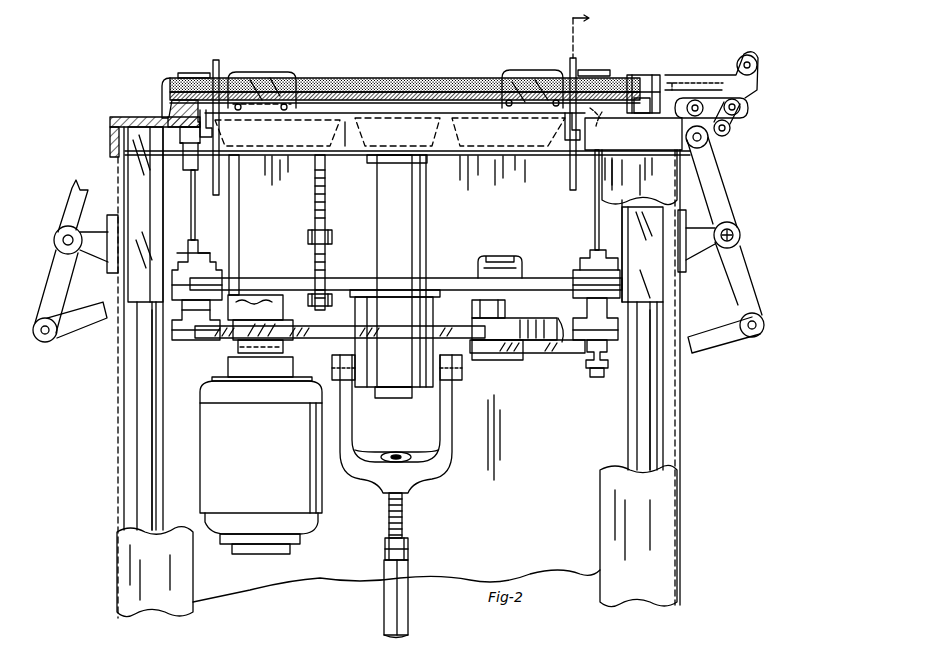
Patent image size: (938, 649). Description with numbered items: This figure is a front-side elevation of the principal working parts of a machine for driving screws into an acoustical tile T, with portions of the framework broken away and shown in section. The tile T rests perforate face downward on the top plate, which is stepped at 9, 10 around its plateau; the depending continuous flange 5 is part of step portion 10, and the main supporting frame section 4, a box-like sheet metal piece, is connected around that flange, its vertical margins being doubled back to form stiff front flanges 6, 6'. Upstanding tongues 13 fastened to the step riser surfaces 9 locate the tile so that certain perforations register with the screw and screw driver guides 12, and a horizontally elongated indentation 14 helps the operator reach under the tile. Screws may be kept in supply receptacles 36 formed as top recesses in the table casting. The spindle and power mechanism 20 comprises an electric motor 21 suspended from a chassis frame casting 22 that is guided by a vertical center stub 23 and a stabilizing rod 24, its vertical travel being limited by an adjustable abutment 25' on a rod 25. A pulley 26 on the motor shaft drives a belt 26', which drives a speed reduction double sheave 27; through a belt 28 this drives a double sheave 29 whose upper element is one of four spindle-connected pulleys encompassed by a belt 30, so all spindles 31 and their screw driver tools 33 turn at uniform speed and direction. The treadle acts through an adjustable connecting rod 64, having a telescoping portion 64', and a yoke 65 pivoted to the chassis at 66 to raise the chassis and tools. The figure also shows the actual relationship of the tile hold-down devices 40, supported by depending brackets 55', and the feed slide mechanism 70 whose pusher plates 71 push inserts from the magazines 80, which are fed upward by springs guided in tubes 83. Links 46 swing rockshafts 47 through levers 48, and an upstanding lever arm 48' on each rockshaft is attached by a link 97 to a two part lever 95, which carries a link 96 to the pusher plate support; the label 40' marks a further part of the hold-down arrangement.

The main supporting frame section 4 is at (90, 458).
The depending continuous flange 5 is at (110, 130).
The front flange 6 is at (397, 383).
The front flange 6' is at (638, 535).
The step riser surface 9 is at (462, 112).
The step portion 10 is at (160, 116).
The screw and screw driver guide 12 is at (186, 166).
The upstanding tongue 13 is at (162, 82).
The horizontally elongated indentation 14 is at (172, 106).
The tile T is at (370, 92).
The spindle and power mechanism 20 is at (537, 242).
The electric motor 21 is at (261, 465).
The chassis frame casting 22 is at (438, 278).
The vertical center stub 23 is at (427, 228).
The stabilizing rod 24 is at (241, 232).
The rod 25 is at (335, 232).
The adjustable abutment 25' is at (336, 237).
The pulley 26 is at (249, 329).
The belt 26' is at (472, 309).
The speed reduction double sheave 27 is at (500, 336).
The belt 28 is at (548, 354).
The double sheave 29 is at (564, 326).
The belt 30 is at (200, 338).
The spindle 31 is at (586, 258).
The screw driver tool 33 is at (191, 232).
The supply receptacle 36 is at (291, 168).
The tile hold-down device 40 is at (413, 107).
The pin plate 40' is at (406, 60).
The link 46 is at (84, 328).
The rockshaft 47 is at (60, 228).
The lever 48 is at (410, 261).
The upstanding lever arm 48' is at (730, 182).
The depending bracket 55' is at (390, 129).
The adjustable connecting rod 64 is at (422, 529).
The telescoping portion 64' is at (418, 599).
The yoke 65 is at (450, 424).
The pivot 66 is at (462, 370).
The feed slide mechanism 70 is at (683, 70).
The pusher plate 71 is at (645, 74).
The magazine 80 is at (395, 214).
The spring guiding tube 83 is at (156, 496).
The two part lever 95 is at (748, 108).
The link 96 is at (735, 122).
The link 97 is at (722, 142).